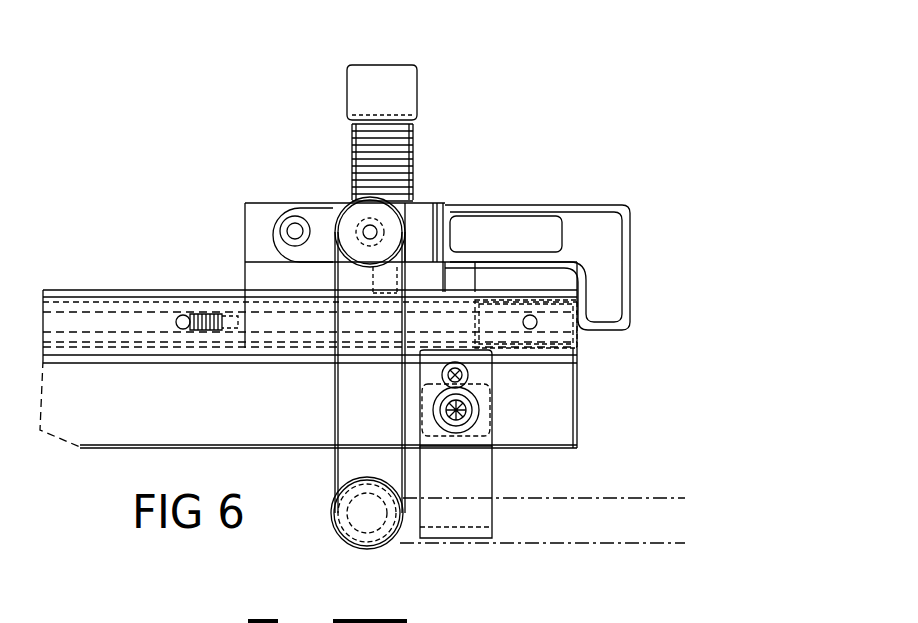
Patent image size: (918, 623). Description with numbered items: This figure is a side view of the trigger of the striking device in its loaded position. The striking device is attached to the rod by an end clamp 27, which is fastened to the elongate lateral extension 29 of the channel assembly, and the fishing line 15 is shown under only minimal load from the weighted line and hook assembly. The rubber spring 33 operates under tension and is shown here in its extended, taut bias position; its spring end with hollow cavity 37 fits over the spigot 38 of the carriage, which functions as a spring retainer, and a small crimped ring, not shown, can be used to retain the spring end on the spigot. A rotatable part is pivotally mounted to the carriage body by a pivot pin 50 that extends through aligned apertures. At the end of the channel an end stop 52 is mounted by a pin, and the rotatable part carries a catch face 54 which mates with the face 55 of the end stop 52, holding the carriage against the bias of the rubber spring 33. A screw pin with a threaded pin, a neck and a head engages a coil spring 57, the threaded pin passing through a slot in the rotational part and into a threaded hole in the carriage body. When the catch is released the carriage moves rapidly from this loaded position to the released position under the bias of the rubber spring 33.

The line 15 is at (520, 547).
The end clamp 27 is at (492, 472).
The elongate lateral extension 29 is at (275, 410).
The rubber spring 33 is at (123, 315).
The hollow cavity 37 is at (187, 313).
The spigot 38 is at (225, 332).
The pivot pin 50 is at (295, 218).
The end stop 52 is at (505, 327).
The catch face 54 is at (567, 280).
The face 55 is at (575, 337).
The coil spring 57 is at (353, 160).